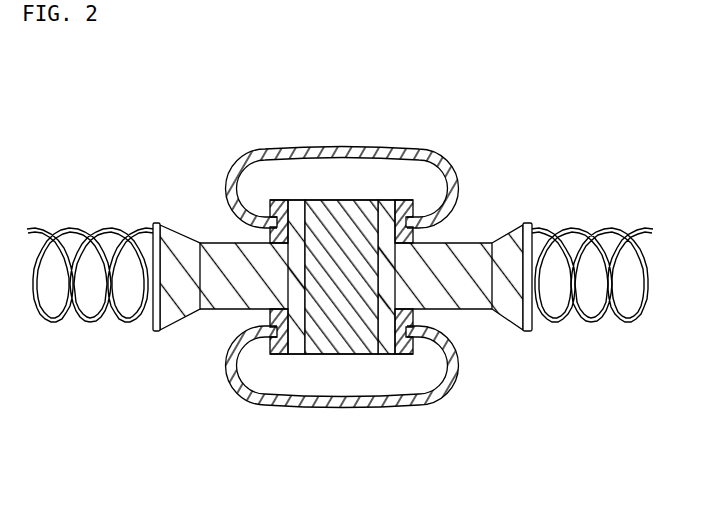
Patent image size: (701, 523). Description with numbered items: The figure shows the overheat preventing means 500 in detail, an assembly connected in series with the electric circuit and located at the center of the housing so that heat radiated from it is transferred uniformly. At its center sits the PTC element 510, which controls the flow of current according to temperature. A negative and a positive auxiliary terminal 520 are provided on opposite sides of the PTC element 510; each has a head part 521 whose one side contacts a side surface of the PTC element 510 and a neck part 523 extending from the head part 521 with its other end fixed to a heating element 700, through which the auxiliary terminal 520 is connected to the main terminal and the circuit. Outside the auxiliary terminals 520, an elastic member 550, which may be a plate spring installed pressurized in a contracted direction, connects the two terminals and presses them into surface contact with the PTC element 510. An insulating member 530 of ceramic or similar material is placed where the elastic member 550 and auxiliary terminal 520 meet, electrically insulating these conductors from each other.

The overheat preventing means 500 is at (348, 266).
The PTC element 510 is at (338, 330).
The auxiliary terminal 520 is at (348, 280).
The head part 521 is at (385, 340).
The neck part 523 is at (480, 300).
The insulating member 530 is at (272, 345).
The elastic member 550 is at (322, 150).
The heating element 700 is at (90, 322).